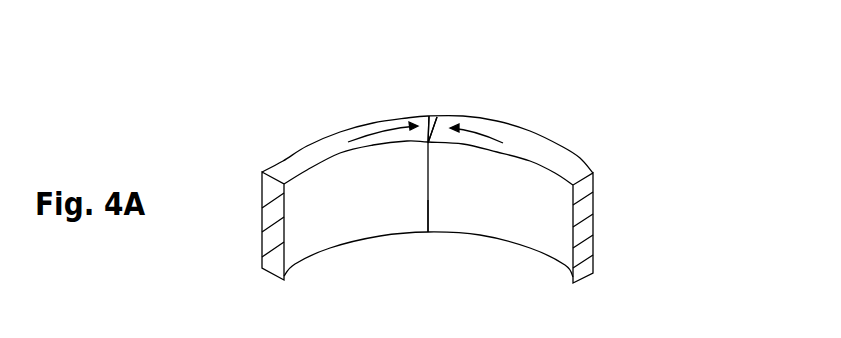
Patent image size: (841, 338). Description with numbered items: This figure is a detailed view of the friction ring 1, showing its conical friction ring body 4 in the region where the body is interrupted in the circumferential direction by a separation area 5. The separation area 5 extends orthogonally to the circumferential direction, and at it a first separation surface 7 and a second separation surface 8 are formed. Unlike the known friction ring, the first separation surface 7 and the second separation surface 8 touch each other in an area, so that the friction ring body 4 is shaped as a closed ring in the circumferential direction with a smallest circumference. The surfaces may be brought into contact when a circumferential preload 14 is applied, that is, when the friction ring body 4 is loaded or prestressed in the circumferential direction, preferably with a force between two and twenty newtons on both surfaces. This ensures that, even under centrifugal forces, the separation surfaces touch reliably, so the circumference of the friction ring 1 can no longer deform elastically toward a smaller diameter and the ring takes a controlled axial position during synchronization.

The friction ring 1 is at (482, 167).
The friction ring body 4 is at (528, 146).
The separation area 5 is at (447, 110).
The first separation surface 7 is at (429, 180).
The second separation surface 8 is at (428, 208).
The circumferential preload 14 is at (370, 120).